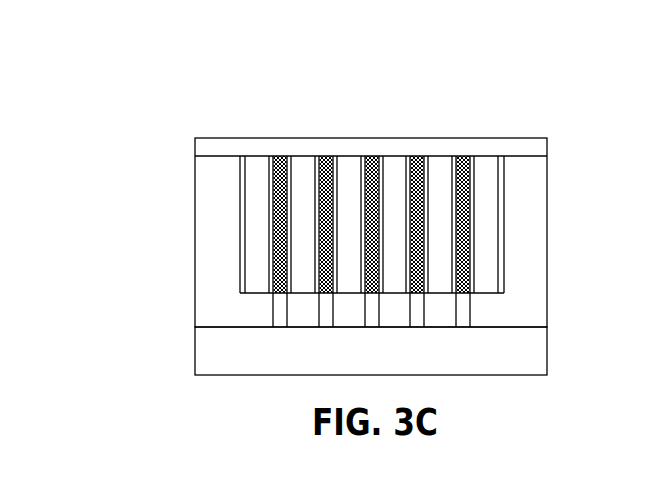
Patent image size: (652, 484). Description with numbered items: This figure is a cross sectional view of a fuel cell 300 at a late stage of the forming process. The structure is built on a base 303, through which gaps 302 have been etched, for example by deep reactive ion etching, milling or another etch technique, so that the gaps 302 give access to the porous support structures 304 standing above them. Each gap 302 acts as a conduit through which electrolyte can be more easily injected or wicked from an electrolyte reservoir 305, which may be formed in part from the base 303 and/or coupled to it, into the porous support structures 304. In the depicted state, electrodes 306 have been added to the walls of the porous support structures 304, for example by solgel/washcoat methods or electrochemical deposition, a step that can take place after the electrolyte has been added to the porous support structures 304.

The fuel cell 300 is at (230, 97).
The gaps 302 is at (277, 314).
The base 303 is at (195, 247).
The porous support structures 304 is at (420, 175).
The electrolyte reservoir 305 is at (547, 352).
The electrodes 306 is at (359, 205).